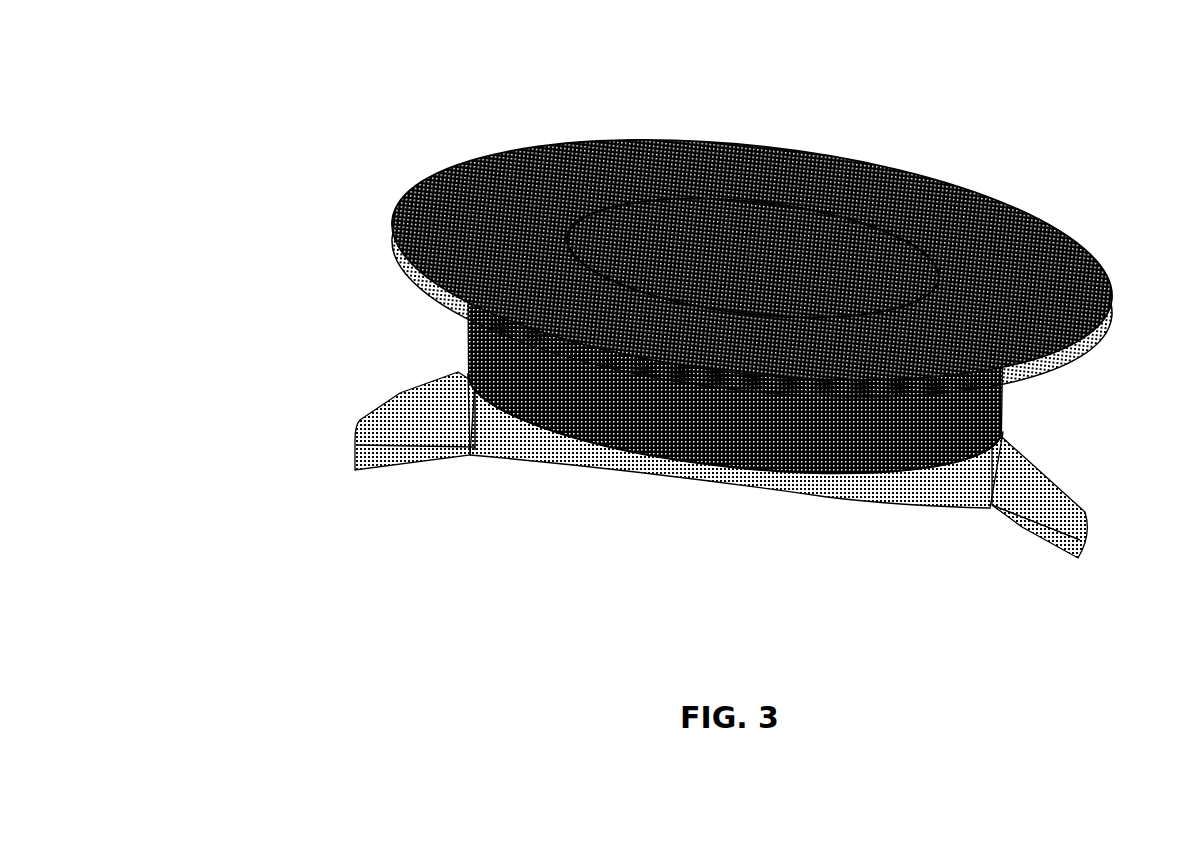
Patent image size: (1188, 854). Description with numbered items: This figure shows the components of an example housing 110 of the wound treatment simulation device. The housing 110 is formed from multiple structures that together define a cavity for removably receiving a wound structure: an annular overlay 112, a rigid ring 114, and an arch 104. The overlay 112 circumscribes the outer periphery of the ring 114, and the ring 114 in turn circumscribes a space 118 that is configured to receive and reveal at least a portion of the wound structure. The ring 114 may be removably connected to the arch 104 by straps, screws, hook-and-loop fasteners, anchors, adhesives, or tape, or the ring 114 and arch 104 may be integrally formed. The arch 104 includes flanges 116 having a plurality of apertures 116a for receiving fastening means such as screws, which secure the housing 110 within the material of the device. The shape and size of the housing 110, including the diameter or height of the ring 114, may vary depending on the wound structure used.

The housing 110 is at (258, 95).
The overlay 112 is at (1060, 258).
The rigid ring 114 is at (1005, 410).
The space 118 is at (697, 228).
The arch 104 is at (460, 374).
The flanges 116 is at (1042, 524).
The apertures 116a is at (398, 428).